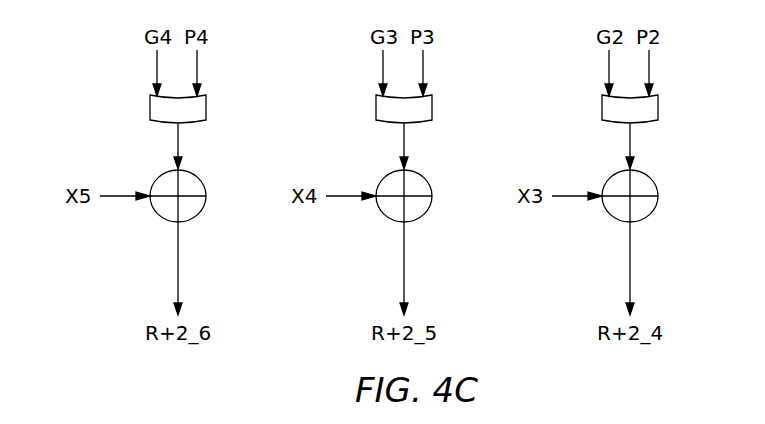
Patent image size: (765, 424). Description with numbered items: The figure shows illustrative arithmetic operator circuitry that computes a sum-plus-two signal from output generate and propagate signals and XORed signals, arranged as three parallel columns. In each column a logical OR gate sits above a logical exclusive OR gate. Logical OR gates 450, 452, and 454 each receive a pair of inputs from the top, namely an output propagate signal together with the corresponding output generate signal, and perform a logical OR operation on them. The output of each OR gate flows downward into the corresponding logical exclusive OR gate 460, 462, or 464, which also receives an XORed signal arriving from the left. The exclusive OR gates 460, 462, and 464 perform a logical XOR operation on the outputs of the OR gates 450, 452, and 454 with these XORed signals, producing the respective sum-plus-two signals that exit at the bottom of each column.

The logical OR gate 450 is at (602, 108).
The logical OR gate 452 is at (376, 108).
The logical OR gate 454 is at (150, 108).
The logical exclusive OR gate 460 is at (612, 219).
The logical exclusive OR gate 462 is at (386, 219).
The logical exclusive OR gate 464 is at (160, 219).